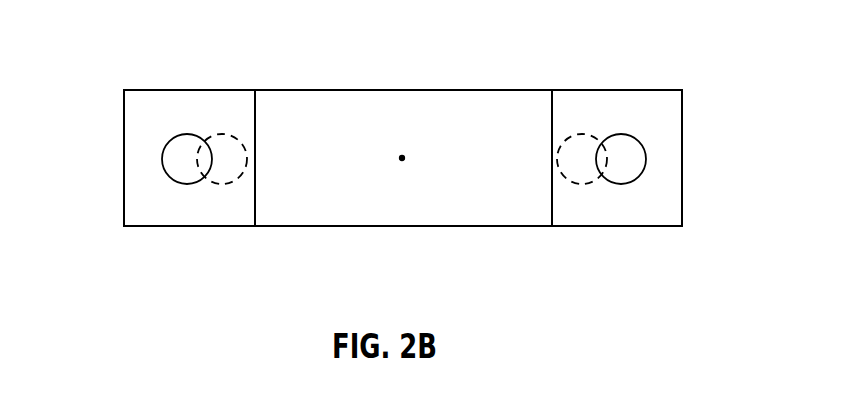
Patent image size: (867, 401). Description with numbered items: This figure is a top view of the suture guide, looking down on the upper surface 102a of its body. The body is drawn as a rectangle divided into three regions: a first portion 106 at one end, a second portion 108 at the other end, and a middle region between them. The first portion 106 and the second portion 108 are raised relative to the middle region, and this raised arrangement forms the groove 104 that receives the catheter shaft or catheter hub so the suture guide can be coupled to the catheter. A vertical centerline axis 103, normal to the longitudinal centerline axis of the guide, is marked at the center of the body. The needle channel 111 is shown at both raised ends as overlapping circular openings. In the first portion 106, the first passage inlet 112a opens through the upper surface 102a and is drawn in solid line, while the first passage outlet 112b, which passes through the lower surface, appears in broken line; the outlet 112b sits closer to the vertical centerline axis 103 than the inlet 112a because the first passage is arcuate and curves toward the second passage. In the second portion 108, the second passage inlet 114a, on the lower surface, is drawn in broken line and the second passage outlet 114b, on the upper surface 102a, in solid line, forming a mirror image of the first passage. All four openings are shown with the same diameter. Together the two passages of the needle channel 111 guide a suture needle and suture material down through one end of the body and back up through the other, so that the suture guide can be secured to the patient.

The upper surface 102a is at (346, 112).
The vertical centerline axis 103 is at (403, 155).
The groove 104 is at (419, 199).
The first portion 106 is at (187, 200).
The second portion 108 is at (668, 185).
The needle channel 111 is at (193, 146).
The first passage inlet 112a is at (162, 162).
The first passage outlet 112b is at (226, 133).
The second passage inlet 114a is at (580, 132).
The second passage outlet 114b is at (612, 186).